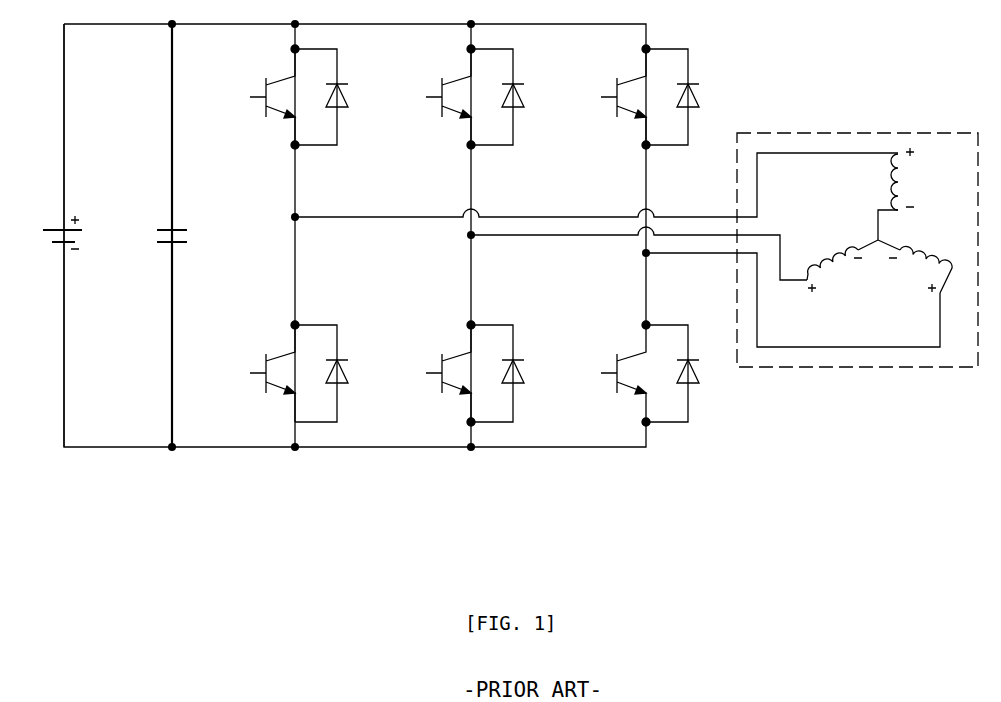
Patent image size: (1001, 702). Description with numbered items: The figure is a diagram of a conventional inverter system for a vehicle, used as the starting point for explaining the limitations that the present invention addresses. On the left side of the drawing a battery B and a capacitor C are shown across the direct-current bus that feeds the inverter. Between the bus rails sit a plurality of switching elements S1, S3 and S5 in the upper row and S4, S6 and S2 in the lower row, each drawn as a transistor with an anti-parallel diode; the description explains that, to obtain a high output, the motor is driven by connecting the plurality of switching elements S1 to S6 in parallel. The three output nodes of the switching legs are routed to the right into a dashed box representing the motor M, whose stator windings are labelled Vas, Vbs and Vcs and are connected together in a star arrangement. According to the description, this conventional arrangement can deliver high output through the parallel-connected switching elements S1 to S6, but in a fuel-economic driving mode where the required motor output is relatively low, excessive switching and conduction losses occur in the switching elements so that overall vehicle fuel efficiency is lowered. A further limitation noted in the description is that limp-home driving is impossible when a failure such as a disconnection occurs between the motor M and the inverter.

The battery B is at (62, 235).
The capacitor C is at (174, 235).
The switching element S1 is at (292, 97).
The switching element S2 is at (643, 373).
The switching element S3 is at (468, 97).
The switching element S4 is at (292, 371).
The switching element S5 is at (643, 97).
The switching element S6 is at (468, 373).
The motor M is at (846, 133).
The a-phase stator winding voltage Vas is at (916, 179).
The b-phase stator winding voltage Vbs is at (835, 269).
The c-phase stator winding voltage Vcs is at (920, 269).